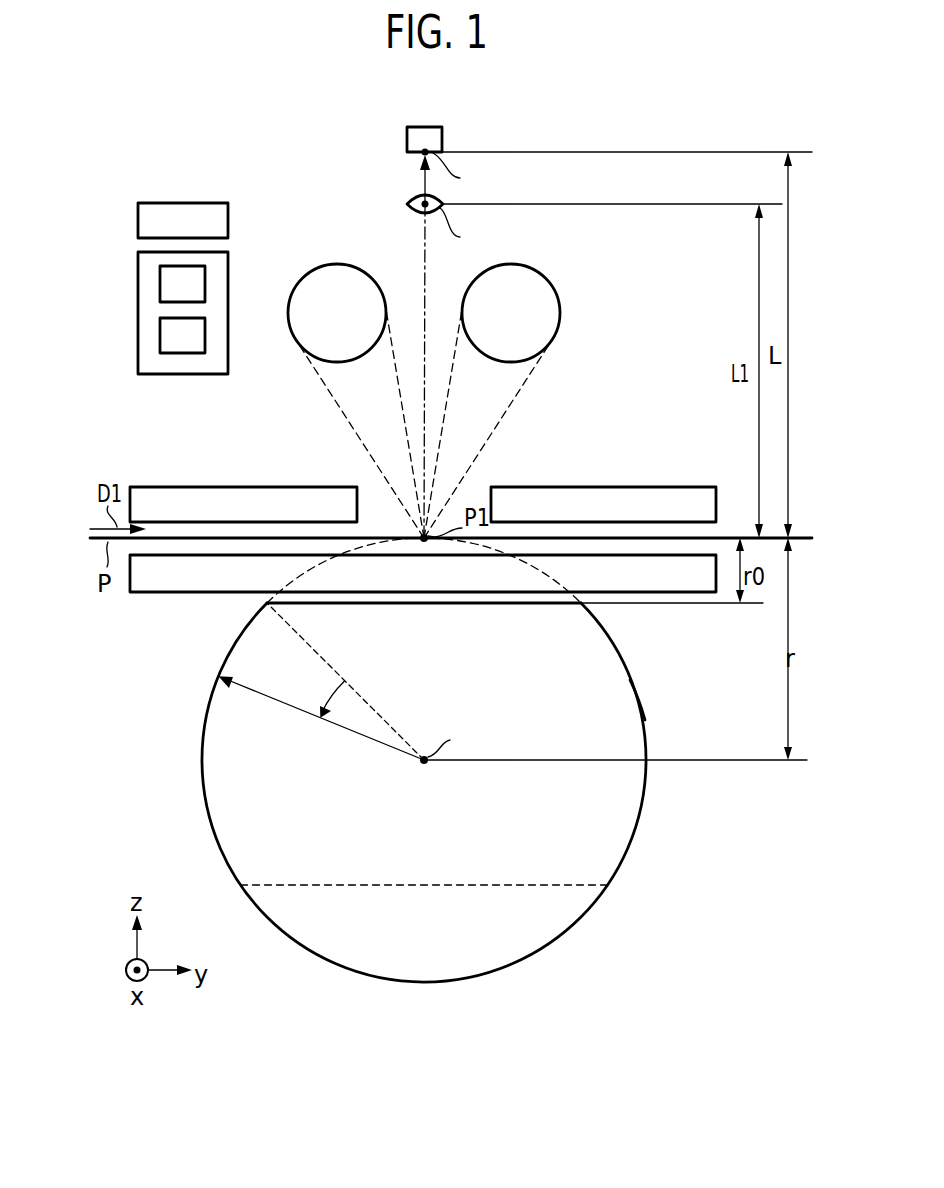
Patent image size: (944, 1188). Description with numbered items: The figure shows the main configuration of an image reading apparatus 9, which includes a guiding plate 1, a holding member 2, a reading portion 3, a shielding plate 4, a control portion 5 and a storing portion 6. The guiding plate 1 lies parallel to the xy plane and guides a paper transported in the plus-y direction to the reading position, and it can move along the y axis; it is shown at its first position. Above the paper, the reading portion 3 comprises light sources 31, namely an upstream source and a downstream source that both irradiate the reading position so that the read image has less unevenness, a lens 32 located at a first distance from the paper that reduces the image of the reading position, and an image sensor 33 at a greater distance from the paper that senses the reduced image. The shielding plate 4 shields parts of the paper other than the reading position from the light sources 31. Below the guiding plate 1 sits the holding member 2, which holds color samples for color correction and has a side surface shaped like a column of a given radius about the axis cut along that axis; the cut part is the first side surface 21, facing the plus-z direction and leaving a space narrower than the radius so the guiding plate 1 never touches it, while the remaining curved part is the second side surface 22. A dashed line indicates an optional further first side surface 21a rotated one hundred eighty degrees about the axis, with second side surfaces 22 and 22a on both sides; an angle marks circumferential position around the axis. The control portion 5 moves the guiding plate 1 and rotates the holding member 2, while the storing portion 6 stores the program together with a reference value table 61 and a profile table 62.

The guiding plate 1 is at (678, 582).
The holding member 2 is at (428, 762).
The first side surface 21 is at (553, 598).
The first side surface 21a is at (350, 885).
The second side surface 22 is at (200, 725).
The second side surface 22a is at (667, 702).
The reading portion 3 is at (290, 353).
The light sources 31 is at (557, 254).
The lens 32 is at (412, 200).
The image sensor 33 is at (407, 145).
The shielding plate 4 is at (218, 493).
The control portion 5 is at (138, 223).
The storing portion 6 is at (138, 265).
The reference value table 61 is at (162, 288).
The profile table 62 is at (162, 337).
The image reading apparatus 9 is at (672, 936).